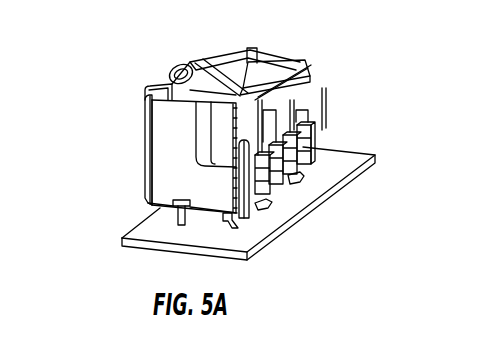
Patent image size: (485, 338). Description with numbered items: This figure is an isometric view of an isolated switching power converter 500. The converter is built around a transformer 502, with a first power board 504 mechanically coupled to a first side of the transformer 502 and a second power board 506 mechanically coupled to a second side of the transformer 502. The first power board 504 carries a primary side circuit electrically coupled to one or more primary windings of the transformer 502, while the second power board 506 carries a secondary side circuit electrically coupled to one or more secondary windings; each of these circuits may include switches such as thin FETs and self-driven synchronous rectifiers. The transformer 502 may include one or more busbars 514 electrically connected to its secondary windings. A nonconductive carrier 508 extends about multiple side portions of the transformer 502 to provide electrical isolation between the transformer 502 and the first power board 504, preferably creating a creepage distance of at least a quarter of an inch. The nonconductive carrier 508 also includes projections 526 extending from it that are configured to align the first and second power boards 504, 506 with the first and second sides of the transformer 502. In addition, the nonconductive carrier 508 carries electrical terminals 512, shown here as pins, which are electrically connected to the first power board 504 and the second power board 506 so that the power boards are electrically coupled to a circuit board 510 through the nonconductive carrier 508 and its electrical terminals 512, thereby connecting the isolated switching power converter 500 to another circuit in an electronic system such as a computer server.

The isolated switching power converter 500 is at (313, 44).
The transformer 502 is at (205, 133).
The first power board 504 is at (146, 106).
The second power board 506 is at (295, 185).
The nonconductive carrier 508 is at (167, 150).
The circuit board 510 is at (122, 240).
The electrical terminals 512 is at (172, 205).
The busbar 514 is at (247, 90).
The projections 526 is at (260, 205).